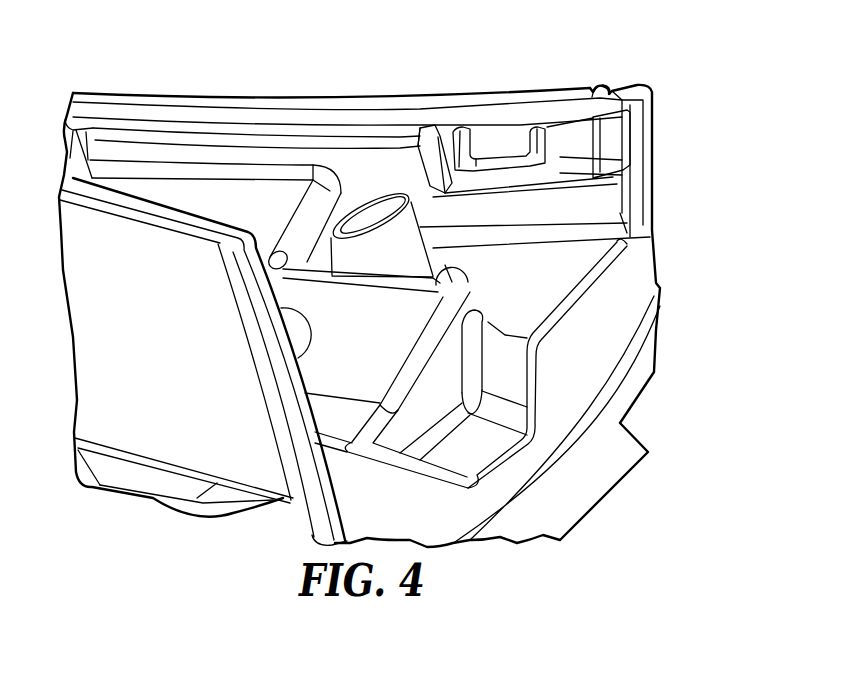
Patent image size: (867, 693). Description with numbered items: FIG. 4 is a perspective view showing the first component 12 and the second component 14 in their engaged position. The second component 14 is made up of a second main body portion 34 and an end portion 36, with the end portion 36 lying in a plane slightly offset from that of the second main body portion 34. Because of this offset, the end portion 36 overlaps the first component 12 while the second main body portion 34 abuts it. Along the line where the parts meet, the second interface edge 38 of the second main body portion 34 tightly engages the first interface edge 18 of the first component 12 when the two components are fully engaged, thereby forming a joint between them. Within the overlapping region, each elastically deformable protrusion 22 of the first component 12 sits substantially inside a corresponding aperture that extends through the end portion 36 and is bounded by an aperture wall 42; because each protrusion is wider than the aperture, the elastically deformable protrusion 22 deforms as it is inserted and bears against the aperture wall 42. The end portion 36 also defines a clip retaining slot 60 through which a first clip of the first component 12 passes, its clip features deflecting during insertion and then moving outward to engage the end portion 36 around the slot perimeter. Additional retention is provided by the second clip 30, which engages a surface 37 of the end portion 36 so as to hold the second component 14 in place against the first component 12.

The first component 12 is at (153, 95).
The second component 14 is at (621, 96).
The first interface edge 18 is at (603, 148).
The elastically deformable protrusion 22 is at (412, 198).
The second clip 30 is at (523, 172).
The second main body portion 34 is at (580, 493).
The end portion 36 is at (222, 190).
The surface 37 is at (640, 166).
The second interface edge 38 is at (593, 96).
The aperture wall 42 is at (470, 277).
The clip retaining slot 60 is at (300, 340).